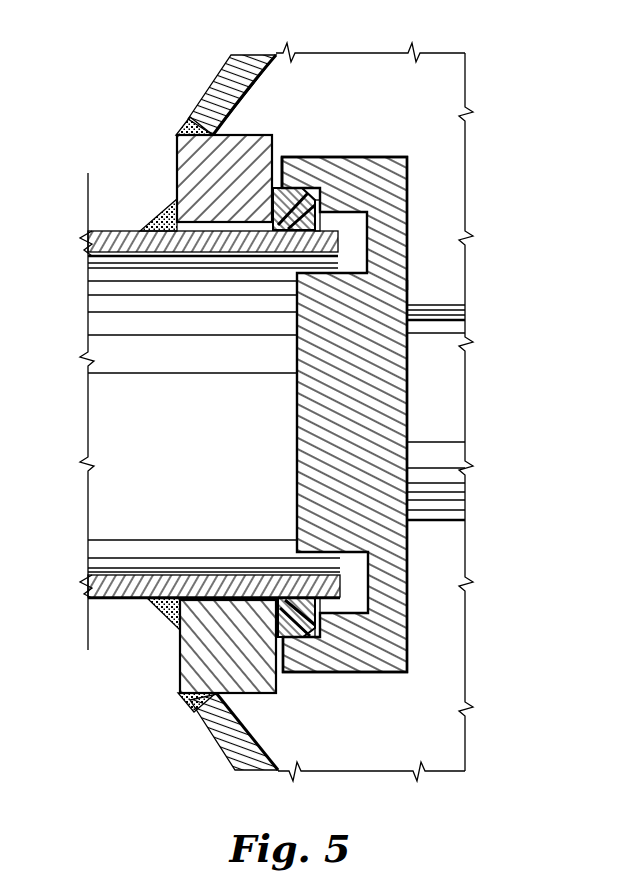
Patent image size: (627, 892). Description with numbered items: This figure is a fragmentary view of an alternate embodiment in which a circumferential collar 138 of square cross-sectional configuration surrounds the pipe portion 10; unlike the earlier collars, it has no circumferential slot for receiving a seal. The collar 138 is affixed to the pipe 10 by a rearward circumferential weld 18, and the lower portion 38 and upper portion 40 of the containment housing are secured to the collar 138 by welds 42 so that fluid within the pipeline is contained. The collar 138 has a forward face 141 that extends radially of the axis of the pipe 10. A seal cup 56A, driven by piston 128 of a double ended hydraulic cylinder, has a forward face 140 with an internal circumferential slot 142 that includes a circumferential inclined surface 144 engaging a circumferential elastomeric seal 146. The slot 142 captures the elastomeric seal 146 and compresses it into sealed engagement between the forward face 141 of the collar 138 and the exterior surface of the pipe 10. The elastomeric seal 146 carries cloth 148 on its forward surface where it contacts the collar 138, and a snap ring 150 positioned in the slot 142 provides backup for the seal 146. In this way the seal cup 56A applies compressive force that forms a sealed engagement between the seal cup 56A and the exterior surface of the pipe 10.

The pipe portion 10 is at (110, 244).
The rearward circumferential weld 18 is at (163, 222).
The containment housing lower portion 38 is at (226, 733).
The containment housing upper portion 40 is at (226, 88).
The weld 42 is at (184, 121).
The seal cup 56A is at (392, 295).
The piston 128 is at (435, 388).
The circumferential collar 138 is at (192, 162).
The forward face 140 is at (297, 395).
The forward face 141 is at (282, 152).
The internal circumferential slot 142 is at (283, 236).
The circumferential inclined surface 144 is at (297, 205).
The circumferential elastomeric seal 146 is at (320, 214).
The cloth 148 is at (268, 617).
The snap ring 150 is at (352, 628).